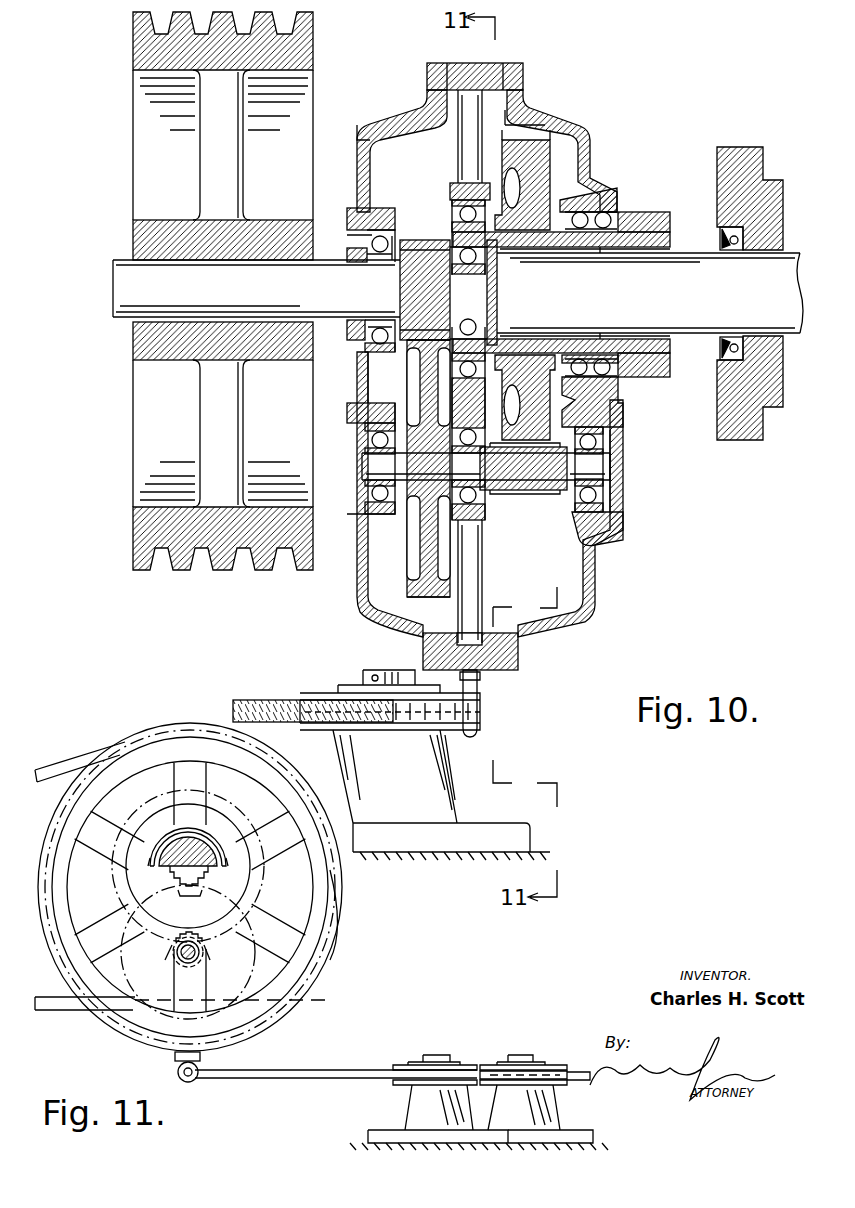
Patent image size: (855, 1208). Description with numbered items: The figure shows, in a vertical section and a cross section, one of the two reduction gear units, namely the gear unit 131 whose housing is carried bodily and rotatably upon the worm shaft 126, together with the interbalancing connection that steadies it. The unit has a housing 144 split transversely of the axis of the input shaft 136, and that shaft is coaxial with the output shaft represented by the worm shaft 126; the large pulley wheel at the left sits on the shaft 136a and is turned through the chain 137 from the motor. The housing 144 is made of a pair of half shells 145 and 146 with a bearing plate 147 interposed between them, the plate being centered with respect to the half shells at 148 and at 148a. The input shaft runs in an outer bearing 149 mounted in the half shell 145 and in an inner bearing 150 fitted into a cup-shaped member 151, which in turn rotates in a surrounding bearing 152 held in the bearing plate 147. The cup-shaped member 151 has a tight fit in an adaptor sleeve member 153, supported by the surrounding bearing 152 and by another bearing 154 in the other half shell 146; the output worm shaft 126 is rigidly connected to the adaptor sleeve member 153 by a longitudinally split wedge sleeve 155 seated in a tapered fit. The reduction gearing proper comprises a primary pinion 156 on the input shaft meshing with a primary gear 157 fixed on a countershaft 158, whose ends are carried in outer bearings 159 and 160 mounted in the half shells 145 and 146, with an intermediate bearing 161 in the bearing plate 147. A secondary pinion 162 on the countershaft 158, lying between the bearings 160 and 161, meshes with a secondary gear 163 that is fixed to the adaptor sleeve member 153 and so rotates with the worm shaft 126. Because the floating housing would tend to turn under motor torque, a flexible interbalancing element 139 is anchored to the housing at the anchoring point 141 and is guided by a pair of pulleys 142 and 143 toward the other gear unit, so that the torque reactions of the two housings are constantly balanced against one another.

In FIG. 10, the worm shaft 126 is at (695, 337).
In FIG. 11, the worm shaft 126 is at (185, 842).
In FIG. 10, the gear unit 131 is at (372, 94).
In FIG. 10, the input shaft 136 is at (140, 568).
In FIG. 11, the input shaft 136 is at (180, 722).
In FIG. 10, the pulley shaft 136a is at (112, 272).
In FIG. 11, the chain 137 is at (55, 760).
In FIG. 10, the interbalancing element 139 is at (282, 702).
In FIG. 11, the interbalancing element 139 is at (297, 1078).
In FIG. 10, the anchoring point 141 is at (479, 722).
In FIG. 11, the anchoring point 141 is at (200, 1080).
In FIG. 11, the pulley 142 is at (555, 1065).
In FIG. 10, the pulley 143 is at (320, 690).
In FIG. 11, the pulley 143 is at (407, 1065).
In FIG. 10, the housing 144 is at (612, 87).
In FIG. 10, the half shell 145 is at (355, 595).
In FIG. 10, the half shell 146 is at (598, 600).
In FIG. 10, the bearing plate 147 is at (425, 90).
In FIG. 11, the bearing plate 147 is at (338, 932).
In FIG. 10, the centering location 148 is at (457, 95).
In FIG. 10, the centering location 148a is at (503, 90).
In FIG. 10, the outer bearing 149 is at (386, 230).
In FIG. 10, the inner bearing 150 is at (527, 313).
In FIG. 10, the cup-shaped member 151 is at (503, 268).
In FIG. 10, the surrounding bearing 152 is at (452, 203).
In FIG. 10, the adaptor sleeve member 153 is at (623, 237).
In FIG. 11, the adaptor sleeve member 153 is at (218, 857).
In FIG. 10, the bearing 154 is at (600, 200).
In FIG. 10, the wedge sleeve 155 is at (677, 247).
In FIG. 11, the wedge sleeve 155 is at (165, 857).
In FIG. 10, the primary pinion 156 is at (423, 250).
In FIG. 11, the primary pinion 156 is at (205, 890).
In FIG. 10, the primary gear 157 is at (410, 590).
In FIG. 11, the primary gear 157 is at (175, 888).
In FIG. 10, the countershaft 158 is at (362, 462).
In FIG. 11, the countershaft 158 is at (188, 962).
In FIG. 10, the outer bearing 159 is at (368, 503).
In FIG. 10, the outer bearing 160 is at (612, 474).
In FIG. 10, the intermediate bearing 161 is at (490, 518).
In FIG. 10, the secondary pinion 162 is at (522, 494).
In FIG. 11, the secondary pinion 162 is at (172, 942).
In FIG. 10, the secondary gear 163 is at (548, 160).
In FIG. 11, the secondary gear 163 is at (205, 942).